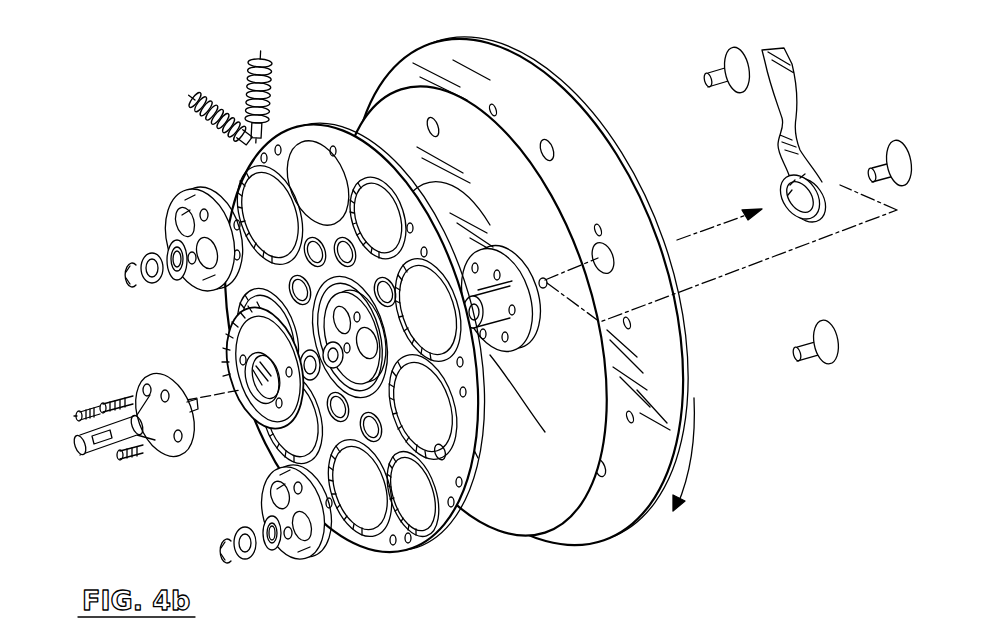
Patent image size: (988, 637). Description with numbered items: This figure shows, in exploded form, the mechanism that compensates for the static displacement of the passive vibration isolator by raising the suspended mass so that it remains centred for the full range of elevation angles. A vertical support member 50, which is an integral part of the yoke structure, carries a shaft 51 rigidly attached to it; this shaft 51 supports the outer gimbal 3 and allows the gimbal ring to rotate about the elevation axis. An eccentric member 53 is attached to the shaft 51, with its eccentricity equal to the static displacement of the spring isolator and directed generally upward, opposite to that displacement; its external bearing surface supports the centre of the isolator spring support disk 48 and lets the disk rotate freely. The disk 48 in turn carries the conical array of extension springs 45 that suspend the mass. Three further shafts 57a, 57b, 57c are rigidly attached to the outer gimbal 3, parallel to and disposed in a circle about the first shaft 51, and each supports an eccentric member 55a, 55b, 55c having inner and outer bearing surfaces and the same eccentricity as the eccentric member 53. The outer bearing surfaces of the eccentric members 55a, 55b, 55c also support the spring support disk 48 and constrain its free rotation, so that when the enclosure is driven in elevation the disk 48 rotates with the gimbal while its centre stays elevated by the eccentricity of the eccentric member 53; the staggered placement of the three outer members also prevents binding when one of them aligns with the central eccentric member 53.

The outer gimbal 3 is at (600, 128).
The extension springs 45 is at (254, 135).
The isolator spring support disk 48 is at (305, 125).
The vertical support member 50 is at (797, 117).
The shaft 51 is at (80, 453).
The eccentric member 53 is at (240, 407).
The eccentric member 55a is at (170, 220).
The eccentric member 55b is at (400, 537).
The eccentric member 55c is at (285, 553).
The shaft 57a is at (732, 47).
The shaft 57b is at (920, 167).
The shaft 57c is at (840, 357).